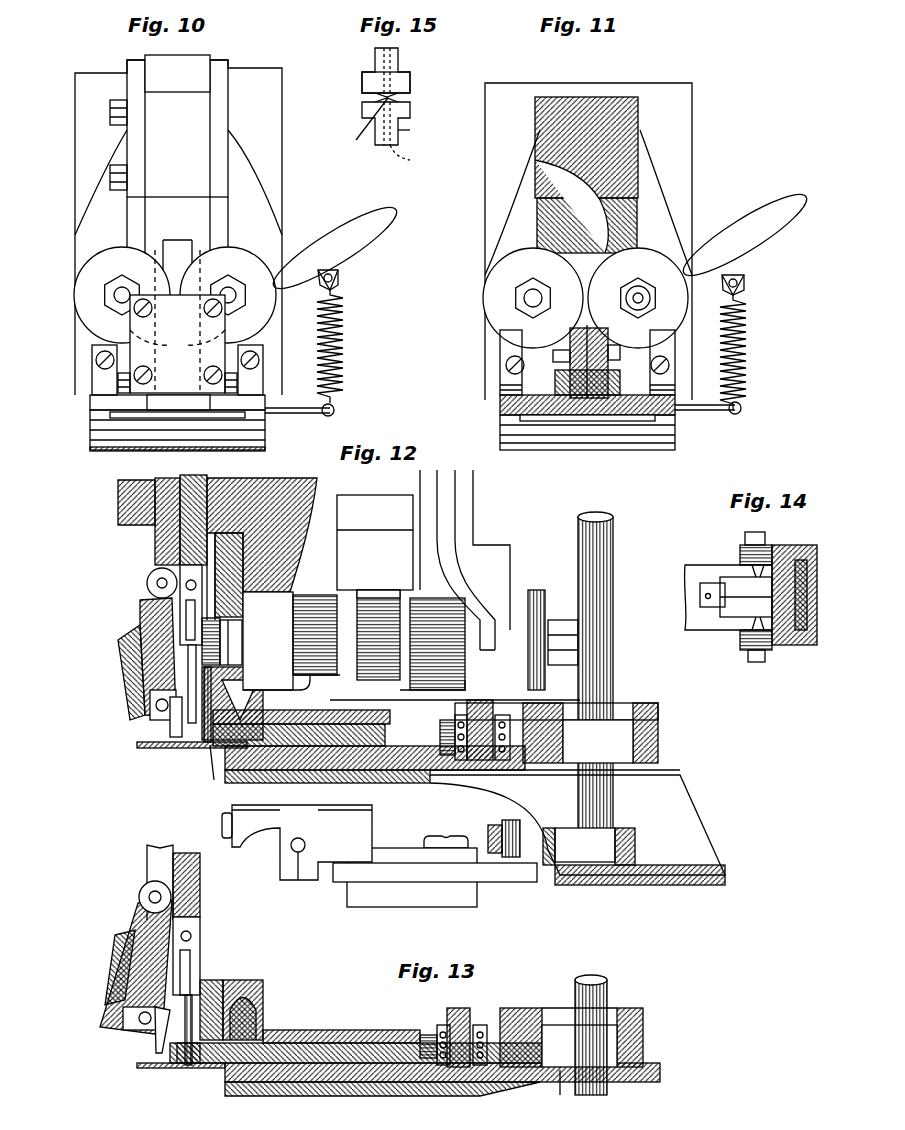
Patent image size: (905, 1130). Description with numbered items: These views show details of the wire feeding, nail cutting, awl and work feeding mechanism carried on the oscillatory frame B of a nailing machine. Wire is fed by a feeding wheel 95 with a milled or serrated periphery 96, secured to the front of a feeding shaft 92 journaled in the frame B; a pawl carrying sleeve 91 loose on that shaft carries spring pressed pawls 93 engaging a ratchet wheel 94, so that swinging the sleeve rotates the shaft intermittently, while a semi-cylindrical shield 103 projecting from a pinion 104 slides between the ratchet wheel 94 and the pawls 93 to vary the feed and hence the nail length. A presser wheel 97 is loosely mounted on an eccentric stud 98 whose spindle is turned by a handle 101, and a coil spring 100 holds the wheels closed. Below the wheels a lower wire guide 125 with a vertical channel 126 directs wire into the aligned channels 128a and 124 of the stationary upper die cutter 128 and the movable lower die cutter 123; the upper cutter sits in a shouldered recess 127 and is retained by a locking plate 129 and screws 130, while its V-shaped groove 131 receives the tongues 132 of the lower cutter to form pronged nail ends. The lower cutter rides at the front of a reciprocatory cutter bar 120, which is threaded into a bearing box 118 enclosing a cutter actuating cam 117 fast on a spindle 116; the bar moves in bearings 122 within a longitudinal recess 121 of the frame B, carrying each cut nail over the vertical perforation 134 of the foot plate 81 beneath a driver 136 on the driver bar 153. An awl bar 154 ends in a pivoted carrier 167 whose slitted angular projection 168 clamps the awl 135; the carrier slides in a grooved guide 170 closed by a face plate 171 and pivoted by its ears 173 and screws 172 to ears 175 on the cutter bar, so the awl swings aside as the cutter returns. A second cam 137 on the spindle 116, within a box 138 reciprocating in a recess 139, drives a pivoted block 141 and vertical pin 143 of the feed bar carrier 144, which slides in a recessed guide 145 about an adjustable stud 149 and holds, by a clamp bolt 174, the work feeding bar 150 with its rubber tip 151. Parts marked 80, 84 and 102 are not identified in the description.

In FIG. 12, the bracket 80 is at (291, 684).
In FIG. 10, the foot plate 81 is at (145, 410).
In FIG. 11, the foot plate 81 is at (520, 418).
In FIG. 12, the foot plate 81 is at (140, 748).
In FIG. 13, the foot plate 81 is at (140, 1068).
In FIG. 12, the arm 84 is at (510, 548).
In FIG. 12, the pawl carrying sleeve 91 is at (345, 588).
In FIG. 10, the feeding shaft 92 is at (118, 300).
In FIG. 11, the feeding shaft 92 is at (524, 298).
In FIG. 12, the feeding shaft 92 is at (545, 615).
In FIG. 12, the spring pressed pawls 93 is at (393, 578).
In FIG. 12, the ratchet wheel 94 is at (380, 660).
In FIG. 10, the feeding wheel 95 is at (122, 295).
In FIG. 11, the feeding wheel 95 is at (533, 298).
In FIG. 12, the milled or serrated periphery 96 is at (220, 640).
In FIG. 10, the feeding or presser wheel 97 is at (228, 295).
In FIG. 11, the feeding or presser wheel 97 is at (638, 298).
In FIG. 10, the cylindrical projection or stud 98 is at (238, 310).
In FIG. 11, the cylindrical projection or stud 98 is at (640, 305).
In FIG. 10, the coil spring 100 is at (343, 330).
In FIG. 11, the coil spring 100 is at (746, 335).
In FIG. 10, the handle 101 is at (334, 247).
In FIG. 11, the handle 101 is at (744, 239).
In FIG. 11, the block 102 is at (560, 225).
In FIG. 12, the block 102 is at (320, 563).
In FIG. 12, the semi-cylindrical shield 103 is at (478, 665).
In FIG. 12, the pinion 104 is at (428, 678).
In FIG. 12, the spindle 116 is at (613, 645).
In FIG. 13, the spindle 116 is at (600, 995).
In FIG. 12, the cutter actuating cam 117 is at (598, 741).
In FIG. 13, the cutter actuating cam 117 is at (579, 1046).
In FIG. 12, the bearing box 118 is at (658, 710).
In FIG. 13, the bearing box 118 is at (643, 1015).
In FIG. 10, the reciprocatory bar 120 is at (200, 410).
In FIG. 12, the reciprocatory bar 120 is at (440, 735).
In FIG. 14, the reciprocatory bar 120 is at (685, 590).
In FIG. 13, the reciprocatory bar 120 is at (420, 1040).
In FIG. 10, the longitudinal recess 121 is at (177, 403).
In FIG. 14, the longitudinal recess 121 is at (817, 575).
In FIG. 12, the bearings 122 is at (301, 719).
In FIG. 13, the bearings 122 is at (330, 1030).
In FIG. 15, the lower die cutter 123 is at (416, 133).
In FIG. 11, the lower die cutter 123 is at (588, 400).
In FIG. 12, the lower die cutter 123 is at (206, 742).
In FIG. 14, the lower die cutter 123 is at (746, 603).
In FIG. 13, the lower die cutter 123 is at (190, 1065).
In FIG. 15, the cylindrical vertical channel 124 is at (412, 156).
In FIG. 11, the cylindrical vertical channel 124 is at (592, 400).
In FIG. 12, the cylindrical vertical channel 124 is at (207, 768).
In FIG. 14, the cylindrical vertical channel 124 is at (746, 597).
In FIG. 13, the cylindrical vertical channel 124 is at (182, 1065).
In FIG. 11, the lower wire guide 125 is at (628, 368).
In FIG. 13, the lower wire guide 125 is at (263, 990).
In FIG. 11, the vertical channel 126 is at (612, 345).
In FIG. 11, the shouldered vertical recess 127 is at (660, 408).
In FIG. 13, the shouldered vertical recess 127 is at (215, 980).
In FIG. 15, the upper die cutter 128 is at (366, 82).
In FIG. 11, the upper die cutter 128 is at (582, 400).
In FIG. 12, the upper die cutter 128 is at (255, 705).
In FIG. 13, the upper die cutter 128 is at (248, 980).
In FIG. 15, the cylindrical vertical channel 128a is at (378, 48).
In FIG. 11, the cylindrical vertical channel 128a is at (586, 400).
In FIG. 12, the cylindrical vertical channel 128a is at (248, 642).
In FIG. 13, the cylindrical vertical channel 128a is at (263, 1015).
In FIG. 11, the locking plate 129 is at (587, 330).
In FIG. 13, the locking plate 129 is at (560, 1092).
In FIG. 11, the screws 130 is at (553, 355).
In FIG. 15, the V-shaped vertical groove 131 is at (375, 100).
In FIG. 13, the V-shaped vertical groove 131 is at (157, 1040).
In FIG. 15, the V-shaped projections or narrow tongues 132 is at (354, 126).
In FIG. 11, the V-shaped projections or narrow tongues 132 is at (600, 400).
In FIG. 12, the vertical perforation 134 is at (225, 810).
In FIG. 12, the awl 135 is at (195, 745).
In FIG. 12, the driver 136 is at (150, 705).
In FIG. 13, the driver 136 is at (128, 1030).
In FIG. 12, the cam 137 is at (579, 846).
In FIG. 12, the box 138 is at (635, 845).
In FIG. 12, the recess 139 is at (475, 810).
In FIG. 12, the block 141 is at (505, 822).
In FIG. 12, the vertical pin 143 is at (500, 825).
In FIG. 12, the feed bar carrier 144 is at (510, 883).
In FIG. 12, the recessed guide or support 145 is at (450, 907).
In FIG. 12, the stud 149 is at (446, 836).
In FIG. 12, the work feeding bar 150 is at (270, 830).
In FIG. 12, the tip 151 is at (222, 815).
In FIG. 12, the driver bar 153 is at (230, 490).
In FIG. 13, the driver bar 153 is at (200, 887).
In FIG. 12, the awl bar 154 is at (170, 545).
In FIG. 13, the awl bar 154 is at (147, 865).
In FIG. 12, the carrier 167 is at (150, 612).
In FIG. 14, the carrier 167 is at (817, 610).
In FIG. 13, the carrier 167 is at (138, 920).
In FIG. 12, the slitted angular projection 168 is at (170, 735).
In FIG. 13, the slitted angular projection 168 is at (150, 1012).
In FIG. 12, the grooved guide or box 170 is at (128, 645).
In FIG. 14, the grooved guide or box 170 is at (805, 645).
In FIG. 13, the grooved guide or box 170 is at (115, 945).
In FIG. 12, the face plate 171 is at (150, 682).
In FIG. 13, the face plate 171 is at (110, 980).
In FIG. 10, the screws 172 is at (120, 393).
In FIG. 14, the screws 172 is at (755, 532).
In FIG. 14, the ears 173 is at (775, 550).
In FIG. 12, the clamp bolt 174 is at (298, 880).
In FIG. 11, the ears 175 is at (640, 415).
In FIG. 14, the ears 175 is at (740, 555).
In FIG. 11, the frame B is at (500, 400).
In FIG. 12, the frame B is at (510, 568).
In FIG. 13, the frame B is at (320, 1096).